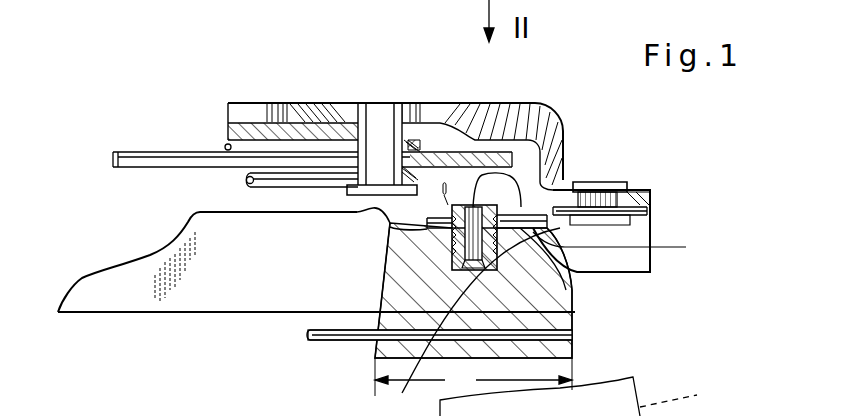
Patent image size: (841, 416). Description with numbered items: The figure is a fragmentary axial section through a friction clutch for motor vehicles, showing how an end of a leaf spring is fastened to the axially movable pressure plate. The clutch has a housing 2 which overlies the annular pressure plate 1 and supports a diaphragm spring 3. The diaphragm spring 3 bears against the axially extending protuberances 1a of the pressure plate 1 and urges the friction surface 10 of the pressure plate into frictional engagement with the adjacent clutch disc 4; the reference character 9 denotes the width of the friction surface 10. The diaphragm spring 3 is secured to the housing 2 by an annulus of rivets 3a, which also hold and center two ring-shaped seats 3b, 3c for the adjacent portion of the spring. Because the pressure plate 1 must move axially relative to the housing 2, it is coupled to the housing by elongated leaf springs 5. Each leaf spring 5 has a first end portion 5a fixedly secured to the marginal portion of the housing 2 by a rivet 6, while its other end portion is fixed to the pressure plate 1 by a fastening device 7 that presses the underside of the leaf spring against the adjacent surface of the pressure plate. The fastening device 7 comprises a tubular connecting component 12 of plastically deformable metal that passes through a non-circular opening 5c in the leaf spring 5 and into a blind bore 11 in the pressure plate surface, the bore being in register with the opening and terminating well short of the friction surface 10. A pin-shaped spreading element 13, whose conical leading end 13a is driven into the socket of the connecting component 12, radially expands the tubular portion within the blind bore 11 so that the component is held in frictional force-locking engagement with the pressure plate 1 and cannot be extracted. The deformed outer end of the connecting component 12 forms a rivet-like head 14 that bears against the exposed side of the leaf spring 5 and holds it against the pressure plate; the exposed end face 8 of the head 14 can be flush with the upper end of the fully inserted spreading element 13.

The pressure plate 1 is at (210, 290).
The axially extending protuberances 1a is at (478, 222).
The housing 2 is at (309, 115).
The diaphragm spring 3 is at (160, 152).
The rivets 3a is at (370, 122).
The ring-shaped seat 3b is at (420, 148).
The ring-shaped seat 3c is at (256, 186).
The clutch disc 4 is at (573, 335).
The leaf spring 5 is at (636, 228).
The first end portion 5a is at (582, 396).
The non-circular opening 5c is at (433, 224).
The rivet 6 is at (626, 190).
The fastening device 7 is at (443, 268).
The exposed end face 8 is at (462, 206).
The width of the friction surface 9 is at (473, 377).
The friction surface 10 is at (423, 317).
The blind bore 11 is at (573, 292).
The tubular connecting component 12 is at (447, 238).
The spreading element 13 is at (568, 210).
The leading end 13a is at (466, 322).
The head 14 is at (540, 148).